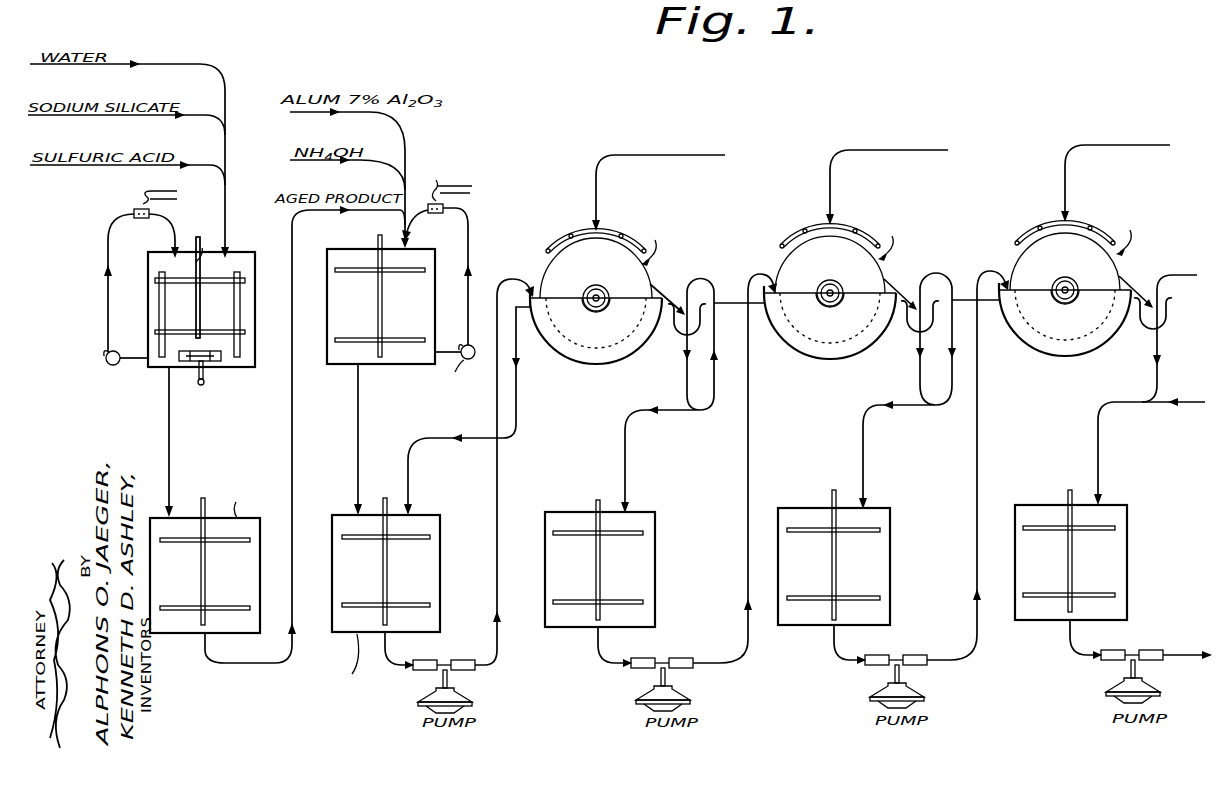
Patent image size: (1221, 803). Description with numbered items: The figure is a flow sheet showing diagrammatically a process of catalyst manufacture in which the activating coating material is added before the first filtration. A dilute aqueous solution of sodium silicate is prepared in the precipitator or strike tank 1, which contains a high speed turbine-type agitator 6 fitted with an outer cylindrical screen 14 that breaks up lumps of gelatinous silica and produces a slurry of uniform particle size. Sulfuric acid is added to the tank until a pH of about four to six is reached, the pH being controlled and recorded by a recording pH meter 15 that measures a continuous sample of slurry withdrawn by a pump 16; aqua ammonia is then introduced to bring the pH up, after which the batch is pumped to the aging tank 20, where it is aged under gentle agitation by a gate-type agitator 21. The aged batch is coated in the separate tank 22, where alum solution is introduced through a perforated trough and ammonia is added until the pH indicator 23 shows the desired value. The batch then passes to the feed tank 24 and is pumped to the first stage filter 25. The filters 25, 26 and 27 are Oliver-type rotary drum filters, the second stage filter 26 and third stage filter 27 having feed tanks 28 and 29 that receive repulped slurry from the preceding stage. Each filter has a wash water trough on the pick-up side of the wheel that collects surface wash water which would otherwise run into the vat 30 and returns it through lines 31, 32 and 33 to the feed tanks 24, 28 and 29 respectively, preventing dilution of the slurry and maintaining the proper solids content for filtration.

The strike tank 1 is at (257, 252).
The turbine-type agitator 6 is at (196, 350).
The cylindrical screen 14 is at (222, 360).
The recording pH meter 15 is at (101, 271).
The pump 16 is at (107, 356).
The aging tank 20 is at (191, 634).
The gate-type agitator 21 is at (183, 544).
The coating tank 22 is at (396, 365).
The pH indicator 23 is at (444, 205).
The feed tank 24 is at (440, 573).
The first stage filter 25 is at (547, 274).
The second stage filter 26 is at (782, 270).
The third stage filter 27 is at (1015, 264).
The feed tank 28 is at (655, 566).
The feed tank 29 is at (890, 563).
The vat 30 is at (587, 358).
The line 31 is at (516, 428).
The line 32 is at (716, 378).
The line 33 is at (954, 352).